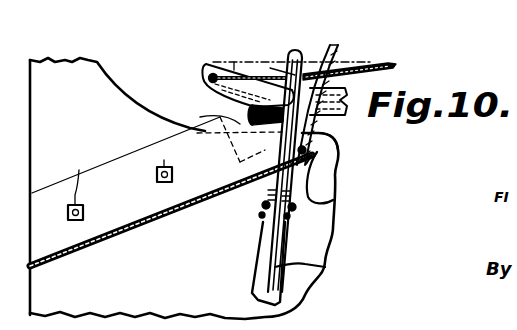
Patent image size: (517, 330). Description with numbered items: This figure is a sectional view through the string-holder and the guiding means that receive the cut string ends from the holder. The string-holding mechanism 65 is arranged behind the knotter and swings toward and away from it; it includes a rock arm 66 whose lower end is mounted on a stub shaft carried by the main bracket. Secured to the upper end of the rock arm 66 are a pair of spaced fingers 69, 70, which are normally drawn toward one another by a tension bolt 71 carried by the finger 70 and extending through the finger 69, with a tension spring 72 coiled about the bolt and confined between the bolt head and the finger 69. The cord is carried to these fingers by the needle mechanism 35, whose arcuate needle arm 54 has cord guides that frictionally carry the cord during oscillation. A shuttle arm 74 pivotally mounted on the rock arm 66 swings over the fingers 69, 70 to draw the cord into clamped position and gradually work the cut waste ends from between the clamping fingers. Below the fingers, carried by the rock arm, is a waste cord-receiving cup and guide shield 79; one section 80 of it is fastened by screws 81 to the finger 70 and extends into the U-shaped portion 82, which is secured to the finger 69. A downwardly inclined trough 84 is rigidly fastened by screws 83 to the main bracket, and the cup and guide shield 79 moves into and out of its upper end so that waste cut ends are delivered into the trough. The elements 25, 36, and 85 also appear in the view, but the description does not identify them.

The axis line 25 is at (222, 61).
The needle mechanism 35 is at (202, 69).
The guide bar 36 is at (380, 66).
The arcuate needle arm 54 is at (201, 80).
The string-holding mechanism 65 is at (271, 240).
The rock arm 66 is at (325, 267).
The finger 69 is at (283, 67).
The finger 70 is at (338, 151).
The tension bolt 71 is at (248, 111).
The tension spring 72 is at (234, 62).
The shuttle arm 74 is at (290, 51).
The waste cord-receiving cup and guide shield 79 is at (343, 177).
The section of the cup and guide shield 80 is at (336, 208).
The screws 81 is at (349, 97).
The U-shaped portion of the cup and guide shield 82 is at (237, 151).
The screws 83 is at (164, 160).
The downwardly inclined trough 84 is at (122, 218).
The base 85 is at (200, 288).